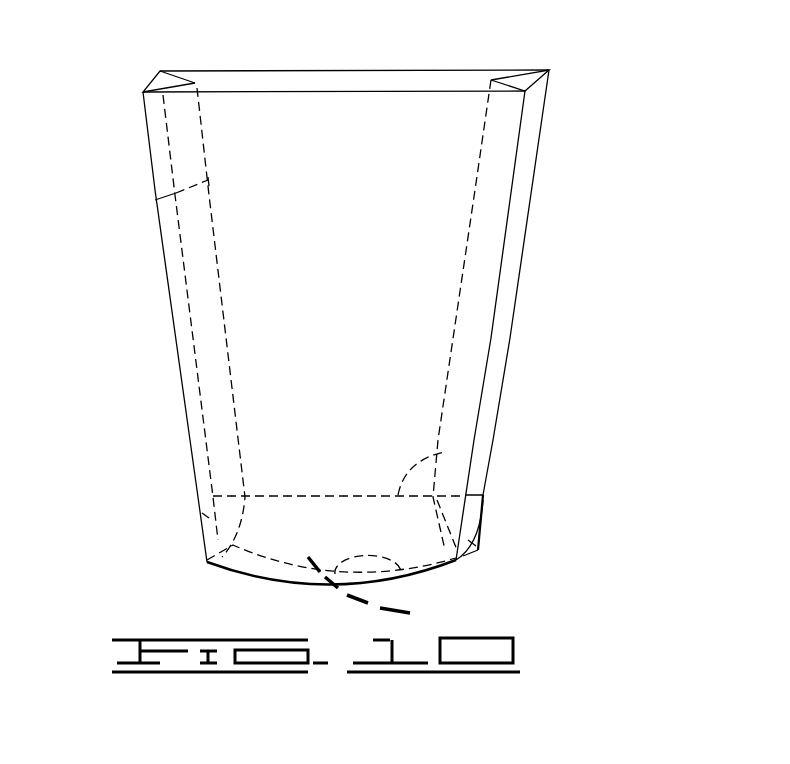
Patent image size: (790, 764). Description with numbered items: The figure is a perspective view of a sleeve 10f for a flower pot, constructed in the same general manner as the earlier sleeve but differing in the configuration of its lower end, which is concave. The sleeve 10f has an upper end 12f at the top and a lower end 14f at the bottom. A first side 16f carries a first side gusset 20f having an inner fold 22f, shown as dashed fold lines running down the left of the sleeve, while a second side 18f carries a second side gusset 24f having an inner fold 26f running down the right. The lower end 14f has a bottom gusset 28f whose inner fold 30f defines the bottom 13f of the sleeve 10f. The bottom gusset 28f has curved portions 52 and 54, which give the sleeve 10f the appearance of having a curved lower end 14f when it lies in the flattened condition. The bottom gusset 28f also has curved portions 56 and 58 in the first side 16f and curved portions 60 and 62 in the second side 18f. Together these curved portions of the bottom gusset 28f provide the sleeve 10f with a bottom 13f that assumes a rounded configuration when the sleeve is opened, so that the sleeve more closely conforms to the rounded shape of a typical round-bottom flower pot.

The sleeve 10f is at (557, 325).
The upper end 12f is at (255, 70).
The bottom 13f is at (388, 593).
The lower end 14f is at (227, 572).
The first side 16f is at (165, 305).
The second side 18f is at (537, 250).
The first side gusset 20f is at (160, 85).
The inner fold 22f is at (155, 201).
The second side gusset 24f is at (535, 117).
The inner fold 26f is at (503, 182).
The bottom gusset 28f is at (483, 510).
The inner fold 30f is at (440, 453).
The curved portion 52 is at (290, 583).
The curved portion 54 is at (405, 572).
The curved portion 56 is at (205, 515).
The curved portion 58 is at (205, 533).
The curved portion 60 is at (483, 528).
The curved portion 62 is at (483, 540).